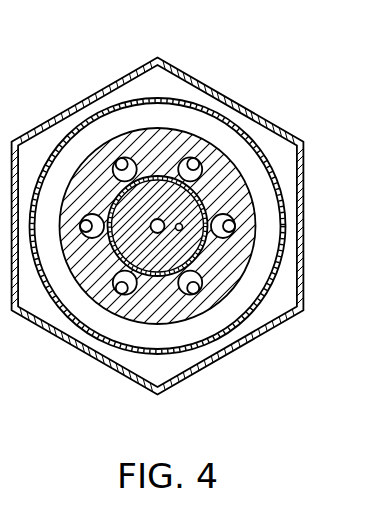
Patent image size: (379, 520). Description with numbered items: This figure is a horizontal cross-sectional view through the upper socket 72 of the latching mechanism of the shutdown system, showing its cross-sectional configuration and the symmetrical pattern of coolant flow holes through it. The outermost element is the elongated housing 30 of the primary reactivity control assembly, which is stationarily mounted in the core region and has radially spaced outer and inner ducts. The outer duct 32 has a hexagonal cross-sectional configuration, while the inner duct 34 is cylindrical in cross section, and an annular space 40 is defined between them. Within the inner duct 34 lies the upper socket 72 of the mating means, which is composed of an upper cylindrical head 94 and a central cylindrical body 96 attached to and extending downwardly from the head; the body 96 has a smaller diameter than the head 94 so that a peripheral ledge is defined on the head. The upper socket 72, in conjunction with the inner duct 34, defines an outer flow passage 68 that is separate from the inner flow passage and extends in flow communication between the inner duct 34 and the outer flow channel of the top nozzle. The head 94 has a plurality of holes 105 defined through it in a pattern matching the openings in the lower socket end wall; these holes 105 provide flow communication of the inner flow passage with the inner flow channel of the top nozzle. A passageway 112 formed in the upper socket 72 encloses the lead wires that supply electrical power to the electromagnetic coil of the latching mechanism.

The elongated housing 30 is at (189, 228).
The outer duct 32 is at (238, 107).
The inner duct 34 is at (265, 299).
The annular space 40 is at (148, 368).
The outer flow passage 68 is at (208, 327).
The upper socket 72 is at (263, 300).
The upper cylindrical head 94 is at (78, 273).
The central cylindrical body 96 is at (96, 258).
The holes 105 is at (188, 170).
The passageway 112 is at (230, 293).